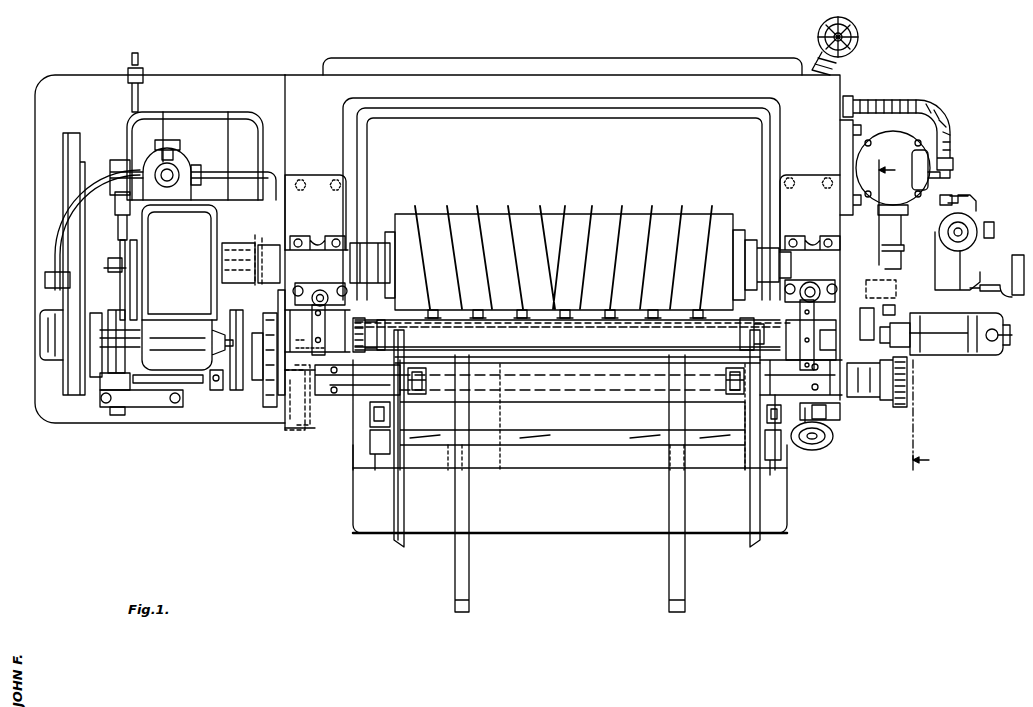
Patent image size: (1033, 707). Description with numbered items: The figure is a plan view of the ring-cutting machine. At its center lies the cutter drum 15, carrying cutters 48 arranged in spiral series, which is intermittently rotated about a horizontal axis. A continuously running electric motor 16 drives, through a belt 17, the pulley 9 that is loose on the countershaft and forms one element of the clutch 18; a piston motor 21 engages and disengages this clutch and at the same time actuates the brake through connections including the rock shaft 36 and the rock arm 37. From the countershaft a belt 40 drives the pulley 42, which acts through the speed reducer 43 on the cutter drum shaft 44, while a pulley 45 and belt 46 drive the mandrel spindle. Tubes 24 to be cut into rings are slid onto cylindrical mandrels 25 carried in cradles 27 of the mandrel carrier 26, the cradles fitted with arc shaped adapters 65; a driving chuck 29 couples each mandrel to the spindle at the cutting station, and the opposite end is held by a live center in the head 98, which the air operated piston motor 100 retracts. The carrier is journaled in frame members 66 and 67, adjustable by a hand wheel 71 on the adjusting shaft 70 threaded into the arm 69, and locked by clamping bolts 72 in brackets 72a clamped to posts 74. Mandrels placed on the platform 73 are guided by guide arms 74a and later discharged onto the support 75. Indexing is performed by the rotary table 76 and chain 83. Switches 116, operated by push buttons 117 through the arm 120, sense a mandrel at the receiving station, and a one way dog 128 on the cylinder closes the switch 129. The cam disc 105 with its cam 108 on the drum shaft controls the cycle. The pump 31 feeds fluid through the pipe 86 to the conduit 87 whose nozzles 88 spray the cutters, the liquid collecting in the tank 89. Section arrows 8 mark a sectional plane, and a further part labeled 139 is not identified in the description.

The section line 8- 8 is at (910, 323).
The pulley 9 is at (66, 392).
The cutter drum 15 is at (565, 249).
The electric motor 16 is at (204, 122).
The belt 17 is at (55, 234).
The clutch 18 is at (52, 380).
The piston motor 21 is at (106, 262).
The tubes 24 is at (567, 335).
The cylindrical mandrels 25 is at (395, 355).
The mandrel carrier 26 is at (549, 415).
The cradles 27 is at (561, 404).
The driving chuck 29 is at (365, 332).
The pump 31 is at (885, 194).
The rock shaft 36 is at (115, 415).
The rock arm 37 is at (148, 395).
The belt 40 is at (243, 317).
The pulley 42 is at (232, 312).
The speed reducer 43 is at (183, 297).
The cutter drum shaft 44 is at (262, 255).
The pulley 45 is at (264, 396).
The belt 46 is at (272, 403).
The cutters 48 is at (580, 273).
The arc shaped adapters 65 is at (467, 382).
The frame member 66 is at (811, 335).
The frame member 67 is at (298, 385).
The arm 69 is at (840, 411).
The adjusting shaft 70 is at (826, 420).
The hand wheel 71 is at (834, 440).
The clamping bolts 72 is at (340, 345).
The brackets 72a is at (320, 289).
The platform 73 is at (584, 455).
The posts 74 is at (310, 288).
The guide arms 74a is at (400, 488).
The support 75 is at (470, 560).
The rotary table 76 is at (885, 292).
The chain 83 is at (898, 408).
The pipe 86 is at (937, 232).
The conduit 87 is at (620, 325).
The nozzles 88 is at (480, 309).
The tank 89 is at (561, 199).
The head 98 is at (750, 332).
The air operated piston motor 100 is at (960, 338).
The cam disc 105 is at (118, 234).
The cam 108 is at (138, 236).
The switches 116 is at (372, 442).
The push buttons 117 is at (420, 386).
The arm 120 is at (370, 414).
The one way dog 128 is at (870, 308).
The switch 129 is at (885, 300).
The valve 139 is at (115, 205).